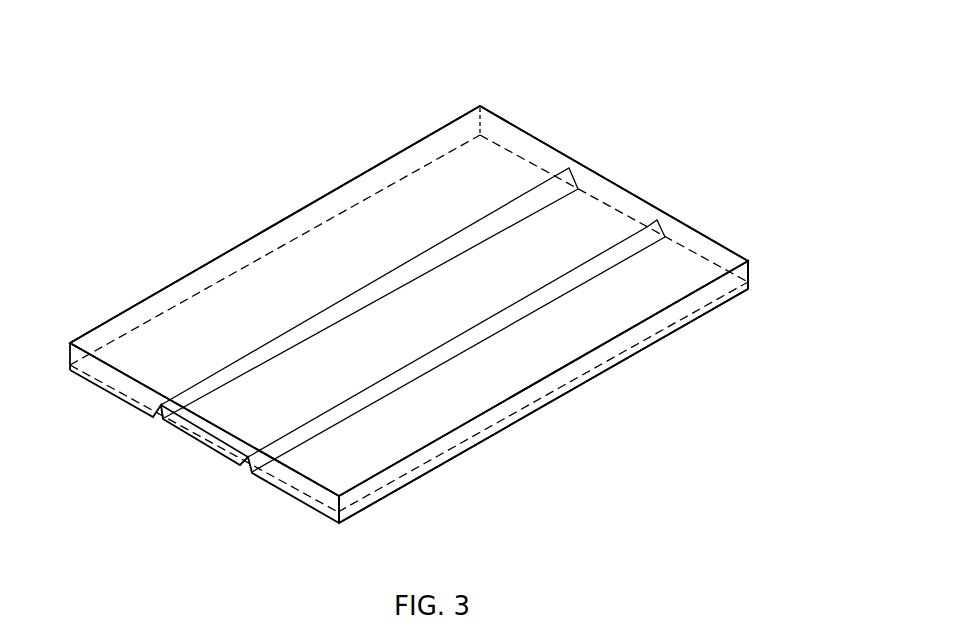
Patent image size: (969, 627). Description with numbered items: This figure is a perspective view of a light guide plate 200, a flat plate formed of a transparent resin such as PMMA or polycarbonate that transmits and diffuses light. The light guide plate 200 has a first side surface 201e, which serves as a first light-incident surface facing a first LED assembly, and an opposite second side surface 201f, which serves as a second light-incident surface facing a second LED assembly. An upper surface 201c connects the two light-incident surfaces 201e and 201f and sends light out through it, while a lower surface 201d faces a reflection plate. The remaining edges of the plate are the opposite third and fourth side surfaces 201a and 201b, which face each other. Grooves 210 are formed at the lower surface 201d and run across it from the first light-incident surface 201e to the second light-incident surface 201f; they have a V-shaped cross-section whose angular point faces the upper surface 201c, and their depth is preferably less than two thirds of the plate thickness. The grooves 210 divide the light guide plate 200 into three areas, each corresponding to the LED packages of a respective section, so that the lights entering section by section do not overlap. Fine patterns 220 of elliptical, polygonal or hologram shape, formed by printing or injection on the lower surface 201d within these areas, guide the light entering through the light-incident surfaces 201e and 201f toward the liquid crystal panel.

The light guide plate 200 is at (434, 284).
The third side surface 201a is at (750, 285).
The fourth side surface 201b is at (400, 152).
The upper surface 201c is at (622, 188).
The lower surface 201d is at (408, 483).
The first side surface 201e is at (282, 486).
The second side surface 201f is at (750, 262).
The grooves 210 is at (157, 424).
The fine patterns 220 is at (137, 393).